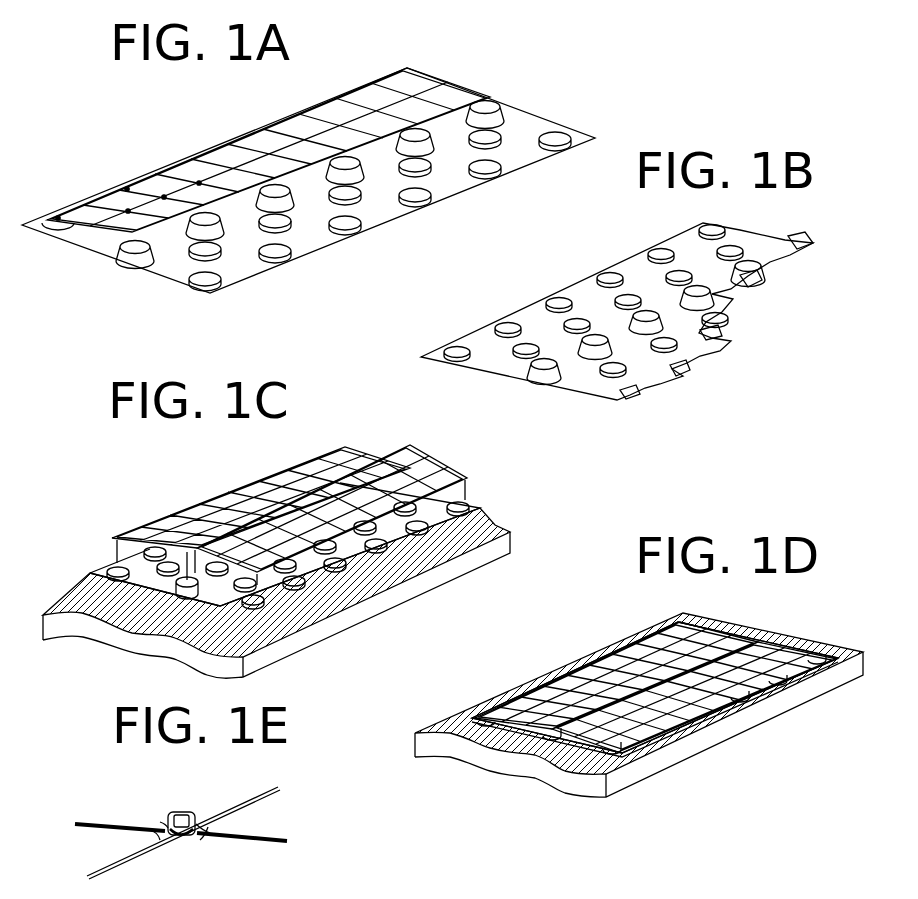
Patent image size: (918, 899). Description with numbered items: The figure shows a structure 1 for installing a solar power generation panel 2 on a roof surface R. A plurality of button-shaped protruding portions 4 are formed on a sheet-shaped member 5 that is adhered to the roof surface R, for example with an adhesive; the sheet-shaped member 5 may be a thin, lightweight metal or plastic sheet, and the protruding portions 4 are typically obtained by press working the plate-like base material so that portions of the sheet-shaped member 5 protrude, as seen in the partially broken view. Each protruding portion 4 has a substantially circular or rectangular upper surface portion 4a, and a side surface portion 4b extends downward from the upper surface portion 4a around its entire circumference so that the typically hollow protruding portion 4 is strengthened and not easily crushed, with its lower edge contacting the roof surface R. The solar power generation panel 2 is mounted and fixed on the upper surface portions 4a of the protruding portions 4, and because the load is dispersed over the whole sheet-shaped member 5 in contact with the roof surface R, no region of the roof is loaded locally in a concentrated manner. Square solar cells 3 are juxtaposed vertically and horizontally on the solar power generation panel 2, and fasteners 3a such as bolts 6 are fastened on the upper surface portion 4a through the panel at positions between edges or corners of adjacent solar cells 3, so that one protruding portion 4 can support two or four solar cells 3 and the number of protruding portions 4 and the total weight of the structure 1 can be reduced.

In FIG. 1A, the structure 1 is at (152, 290).
In FIG. 1B, the structure 1 is at (572, 393).
In FIG. 1C, the structure 1 is at (484, 508).
In FIG. 1D, the structure 1 is at (677, 743).
In FIG. 1A, the solar power generation panel 2 is at (457, 86).
In FIG. 1C, the solar power generation panel 2 is at (347, 447).
In FIG. 1D, the solar power generation panel 2 is at (687, 623).
In FIG. 1A, the solar cell 3 is at (87, 212).
In FIG. 1E, the solar cell 3 is at (191, 799).
In FIG. 1A, the fastener 3a is at (128, 210).
In FIG. 1E, the fastener 3a is at (215, 804).
In FIG. 1A, the protruding portion 4 is at (238, 282).
In FIG. 1B, the protruding portion 4 is at (642, 388).
In FIG. 1A, the upper surface portion 4a is at (300, 222).
In FIG. 1A, the side surface portion 4b is at (287, 228).
In FIG. 1A, the sheet-shaped member 5 is at (387, 204).
In FIG. 1B, the sheet-shaped member 5 is at (740, 232).
In FIG. 1E, the bolt 6 is at (168, 818).
In FIG. 1A, the roof surface R is at (117, 284).
In FIG. 1C, the roof surface R is at (511, 542).
In FIG. 1D, the roof surface R is at (866, 666).